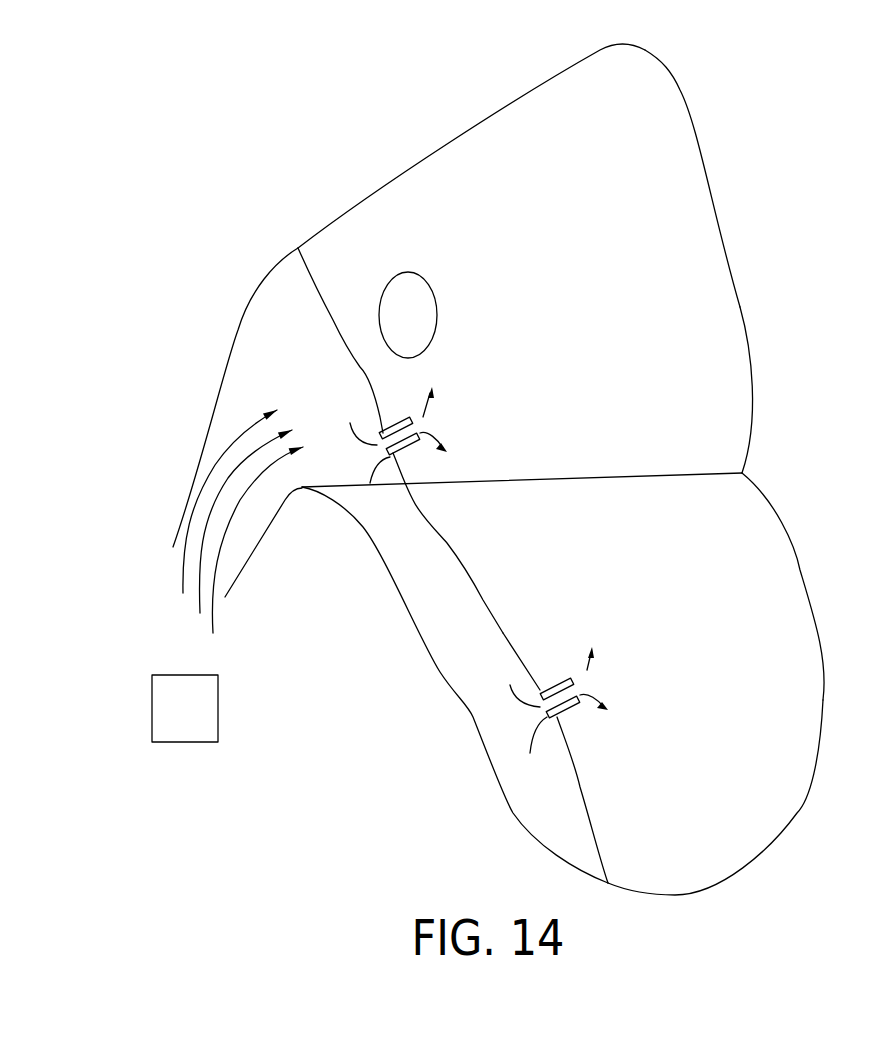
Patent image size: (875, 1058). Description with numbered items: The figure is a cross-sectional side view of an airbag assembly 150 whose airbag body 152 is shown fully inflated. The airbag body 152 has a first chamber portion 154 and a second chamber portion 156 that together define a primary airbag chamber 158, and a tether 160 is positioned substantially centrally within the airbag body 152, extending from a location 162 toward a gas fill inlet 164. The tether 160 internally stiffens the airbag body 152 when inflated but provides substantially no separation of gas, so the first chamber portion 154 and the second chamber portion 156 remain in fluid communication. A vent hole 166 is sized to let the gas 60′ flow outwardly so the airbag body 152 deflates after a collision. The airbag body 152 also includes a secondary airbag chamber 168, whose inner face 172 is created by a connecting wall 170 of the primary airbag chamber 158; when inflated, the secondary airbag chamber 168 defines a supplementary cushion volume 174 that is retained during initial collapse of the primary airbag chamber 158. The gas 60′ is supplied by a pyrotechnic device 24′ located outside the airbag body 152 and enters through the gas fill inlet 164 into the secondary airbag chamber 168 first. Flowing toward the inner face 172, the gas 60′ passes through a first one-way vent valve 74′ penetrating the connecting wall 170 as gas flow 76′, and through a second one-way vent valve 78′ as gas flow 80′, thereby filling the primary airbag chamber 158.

The airbag assembly 150 is at (486, 469).
The airbag body 152 is at (512, 97).
The first chamber portion 154 is at (705, 258).
The second chamber portion 156 is at (783, 580).
The primary airbag chamber 158 is at (791, 801).
The tether 160 is at (647, 483).
The right side region 162 is at (762, 367).
The gas fill inlet 164 is at (180, 548).
The vent hole 166 is at (389, 328).
The secondary airbag chamber 168 is at (536, 834).
The connecting wall 170 is at (329, 272).
The inner face 172 is at (322, 328).
The supplementary cushion volume 174 is at (493, 638).
The gas 60′ is at (237, 528).
The first one-way vent valve 74′ is at (406, 450).
The gas flow 76′ is at (427, 410).
The second one-way vent valve 78′ is at (585, 670).
The gas flow 80′ is at (566, 711).
The pyrotechnic device 24′ is at (168, 721).